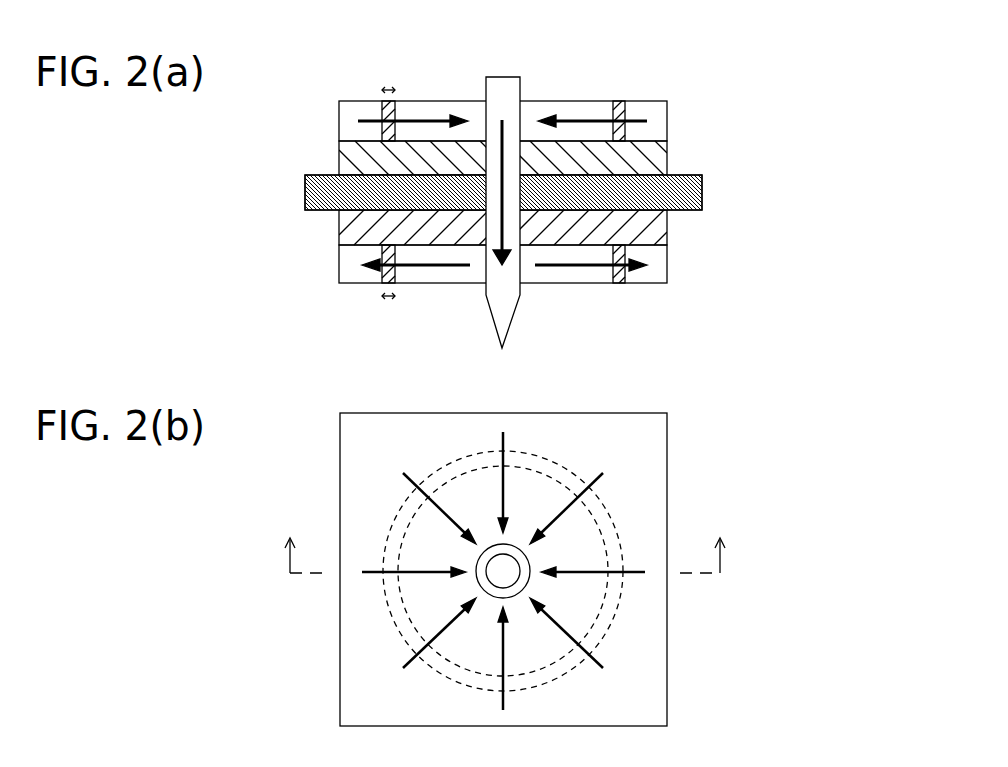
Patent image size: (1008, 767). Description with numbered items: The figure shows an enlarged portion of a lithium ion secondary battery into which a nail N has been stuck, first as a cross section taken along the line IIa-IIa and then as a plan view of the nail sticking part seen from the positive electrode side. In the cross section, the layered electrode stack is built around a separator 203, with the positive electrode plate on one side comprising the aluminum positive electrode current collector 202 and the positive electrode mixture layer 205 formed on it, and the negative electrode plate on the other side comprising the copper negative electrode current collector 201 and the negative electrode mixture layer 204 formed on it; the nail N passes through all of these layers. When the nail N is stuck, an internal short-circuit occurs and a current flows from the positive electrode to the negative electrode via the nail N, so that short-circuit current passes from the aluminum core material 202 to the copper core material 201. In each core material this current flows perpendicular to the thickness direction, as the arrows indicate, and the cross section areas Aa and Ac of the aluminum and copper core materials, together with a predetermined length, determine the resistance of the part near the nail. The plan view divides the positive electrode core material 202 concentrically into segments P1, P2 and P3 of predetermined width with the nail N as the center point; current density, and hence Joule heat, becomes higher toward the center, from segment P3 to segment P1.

In FIG. 2A, the negative electrode current collector 201 is at (352, 268).
In FIG. 2A, the positive electrode current collector 202 is at (352, 121).
In FIG. 2B, the positive electrode current collector 202 is at (667, 445).
In FIG. 2A, the separator 203 is at (305, 192).
In FIG. 2A, the negative electrode mixture layer 204 is at (352, 228).
In FIG. 2A, the positive electrode mixture layer 205 is at (352, 158).
In FIG. 2A, the nail N is at (503, 320).
In FIG. 2B, the nail N is at (508, 550).
In FIG. 2A, the cross section area of aluminum core material Aa is at (382, 105).
In FIG. 2A, the cross section area of copper core material Ac is at (382, 283).
In FIG. 2B, the segment P1 is at (478, 582).
In FIG. 2B, the segment P2 is at (455, 470).
In FIG. 2B, the segment P3 is at (550, 453).
In FIG. 2B, the section line IIa is at (499, 539).